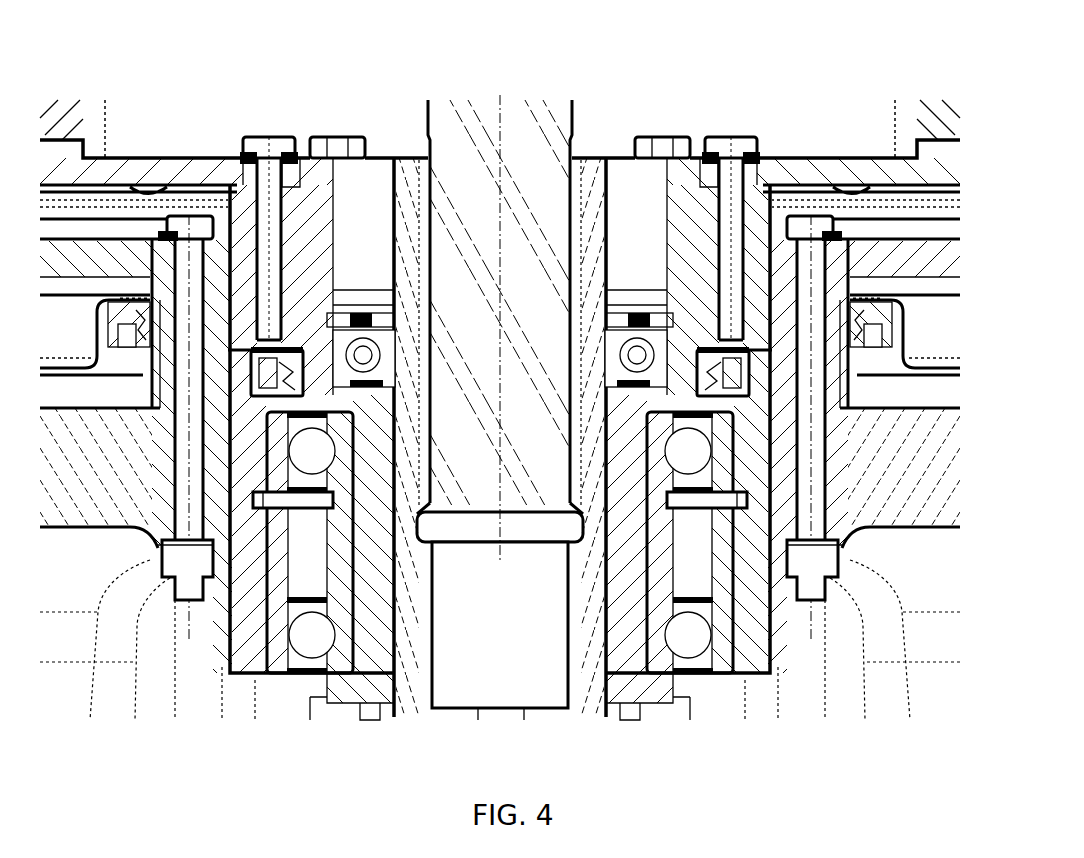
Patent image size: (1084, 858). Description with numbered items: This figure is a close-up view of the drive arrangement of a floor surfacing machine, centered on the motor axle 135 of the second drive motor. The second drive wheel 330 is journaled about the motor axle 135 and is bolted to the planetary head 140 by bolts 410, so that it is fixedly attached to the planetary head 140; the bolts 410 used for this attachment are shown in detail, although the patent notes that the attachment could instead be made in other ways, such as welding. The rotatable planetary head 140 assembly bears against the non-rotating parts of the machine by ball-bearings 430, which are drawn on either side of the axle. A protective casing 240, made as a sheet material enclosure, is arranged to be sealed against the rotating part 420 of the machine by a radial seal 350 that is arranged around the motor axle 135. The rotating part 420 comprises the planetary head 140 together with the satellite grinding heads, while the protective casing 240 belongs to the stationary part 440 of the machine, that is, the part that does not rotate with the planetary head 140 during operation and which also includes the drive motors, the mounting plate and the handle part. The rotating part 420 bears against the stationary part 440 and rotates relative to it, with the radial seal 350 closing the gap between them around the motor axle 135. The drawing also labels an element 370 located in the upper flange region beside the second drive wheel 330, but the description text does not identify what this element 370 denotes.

The motor axle 135 is at (520, 123).
The planetary head 140 is at (97, 493).
The protective casing 240 is at (93, 307).
The second drive wheel 330 is at (153, 256).
The radial seal 350 is at (117, 305).
The flange plate 370 is at (213, 180).
The bolts 410 is at (193, 230).
The rotating part 420 is at (167, 352).
The ball-bearings 430 is at (302, 640).
The stationary part 440 is at (270, 160).